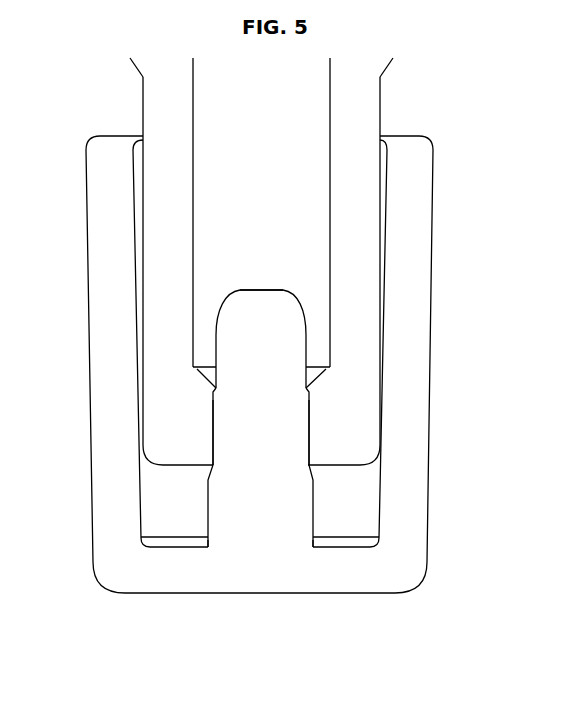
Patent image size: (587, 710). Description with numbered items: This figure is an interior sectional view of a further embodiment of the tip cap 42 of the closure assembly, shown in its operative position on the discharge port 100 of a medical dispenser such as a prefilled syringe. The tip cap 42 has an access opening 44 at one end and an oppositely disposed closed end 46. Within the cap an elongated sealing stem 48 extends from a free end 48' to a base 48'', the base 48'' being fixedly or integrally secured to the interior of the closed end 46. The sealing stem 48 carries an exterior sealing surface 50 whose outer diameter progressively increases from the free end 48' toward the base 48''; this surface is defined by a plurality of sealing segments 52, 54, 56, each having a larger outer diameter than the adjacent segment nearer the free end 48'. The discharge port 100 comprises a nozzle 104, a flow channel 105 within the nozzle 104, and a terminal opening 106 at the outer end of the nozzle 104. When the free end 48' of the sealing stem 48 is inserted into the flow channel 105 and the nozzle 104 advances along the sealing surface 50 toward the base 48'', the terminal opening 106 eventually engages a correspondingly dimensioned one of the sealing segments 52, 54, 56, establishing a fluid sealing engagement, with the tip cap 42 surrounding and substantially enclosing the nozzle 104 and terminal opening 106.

The tip cap 42 is at (325, 364).
The access opening 44 is at (385, 137).
The closed end 46 is at (377, 573).
The sealing stem 48 is at (260, 452).
The free end 48' is at (261, 258).
The base 48'' is at (260, 598).
The exterior sealing surface 50 is at (315, 339).
The sealing segment 52 is at (216, 341).
The sealing segment 54 is at (213, 432).
The sealing segment 56 is at (207, 520).
The discharge port 100 is at (383, 73).
The nozzle 104 is at (155, 201).
The flow channel 105 is at (261, 212).
The terminal opening 106 is at (310, 417).